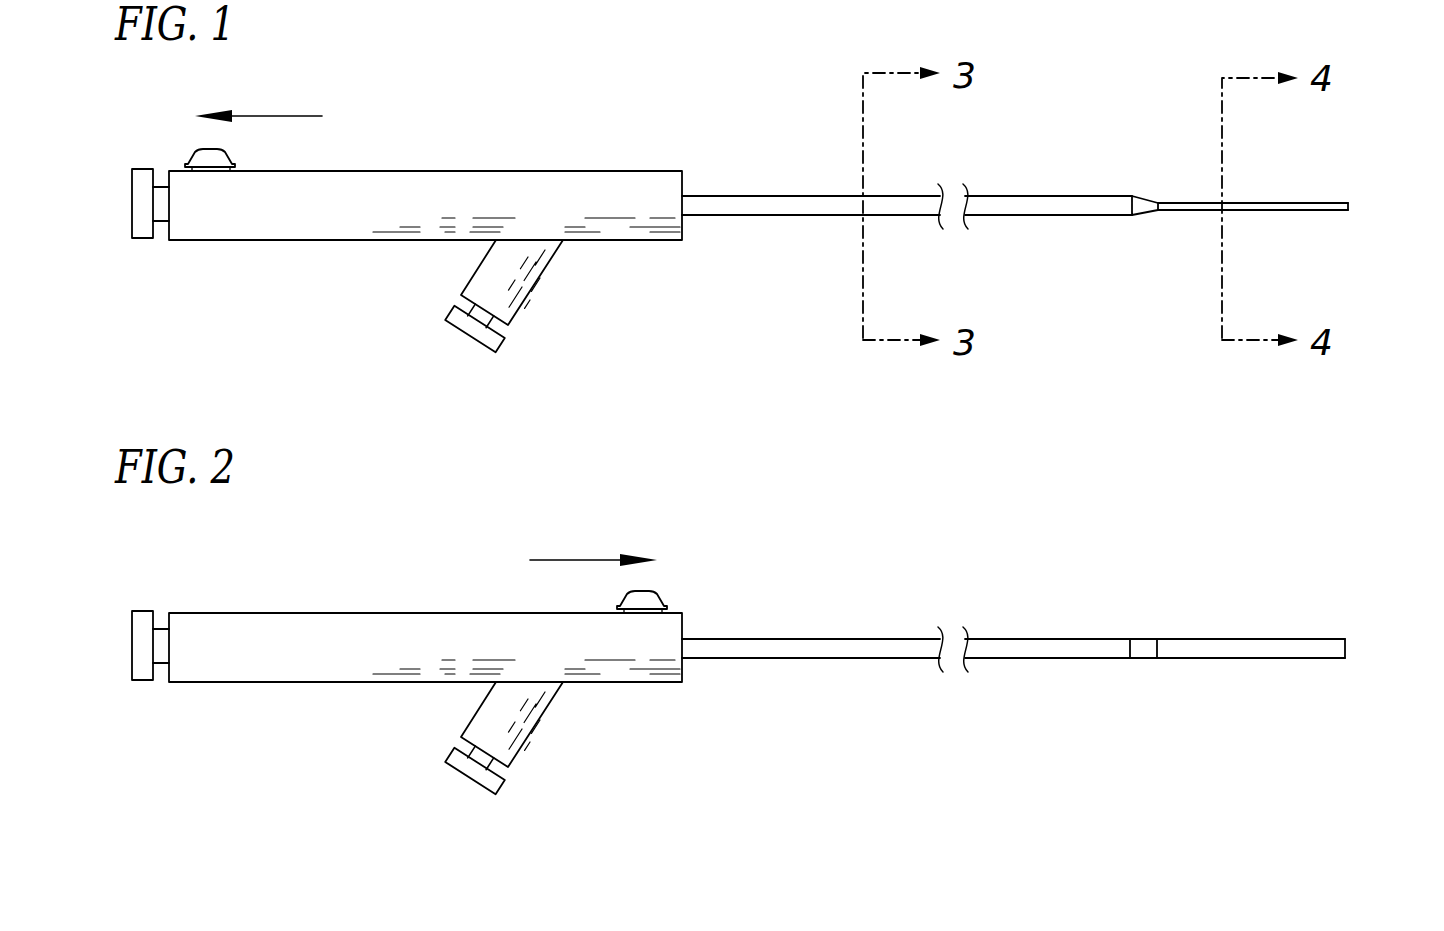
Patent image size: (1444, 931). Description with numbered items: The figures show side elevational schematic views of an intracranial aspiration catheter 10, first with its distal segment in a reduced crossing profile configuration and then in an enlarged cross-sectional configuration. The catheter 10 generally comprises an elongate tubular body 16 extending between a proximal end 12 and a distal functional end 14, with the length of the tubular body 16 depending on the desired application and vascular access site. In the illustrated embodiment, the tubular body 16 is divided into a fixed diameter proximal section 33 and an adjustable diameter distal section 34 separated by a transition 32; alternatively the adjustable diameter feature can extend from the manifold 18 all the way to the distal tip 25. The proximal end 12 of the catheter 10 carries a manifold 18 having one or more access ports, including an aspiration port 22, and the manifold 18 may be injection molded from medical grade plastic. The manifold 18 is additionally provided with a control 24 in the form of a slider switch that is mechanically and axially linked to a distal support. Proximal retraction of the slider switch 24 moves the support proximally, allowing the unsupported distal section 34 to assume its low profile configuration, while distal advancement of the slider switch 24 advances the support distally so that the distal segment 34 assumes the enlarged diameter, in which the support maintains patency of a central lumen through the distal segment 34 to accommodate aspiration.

In FIG. 1, the catheter 10 is at (1087, 94).
In FIG. 2, the catheter 10 is at (1087, 537).
In FIG. 1, the proximal end 12 is at (462, 151).
In FIG. 2, the proximal end 12 is at (350, 593).
In FIG. 1, the distal functional end 14 is at (1316, 169).
In FIG. 2, the distal functional end 14 is at (1314, 612).
In FIG. 1, the elongate tubular body 16 is at (768, 207).
In FIG. 2, the elongate tubular body 16 is at (768, 650).
In FIG. 1, the manifold 18 is at (655, 194).
In FIG. 2, the manifold 18 is at (230, 635).
In FIG. 1, the aspiration port 22 is at (468, 348).
In FIG. 2, the aspiration port 22 is at (470, 786).
In FIG. 1, the control 24 is at (189, 158).
In FIG. 2, the control 24 is at (651, 605).
In FIG. 1, the distal tip 25 is at (1350, 207).
In FIG. 2, the distal tip 25 is at (1347, 652).
In FIG. 1, the transition 32 is at (1147, 207).
In FIG. 2, the transition 32 is at (1143, 650).
In FIG. 1, the fixed diameter proximal section 33 is at (834, 169).
In FIG. 2, the fixed diameter proximal section 33 is at (834, 612).
In FIG. 1, the adjustable diameter distal section 34 is at (1254, 228).
In FIG. 2, the adjustable diameter distal section 34 is at (1252, 671).